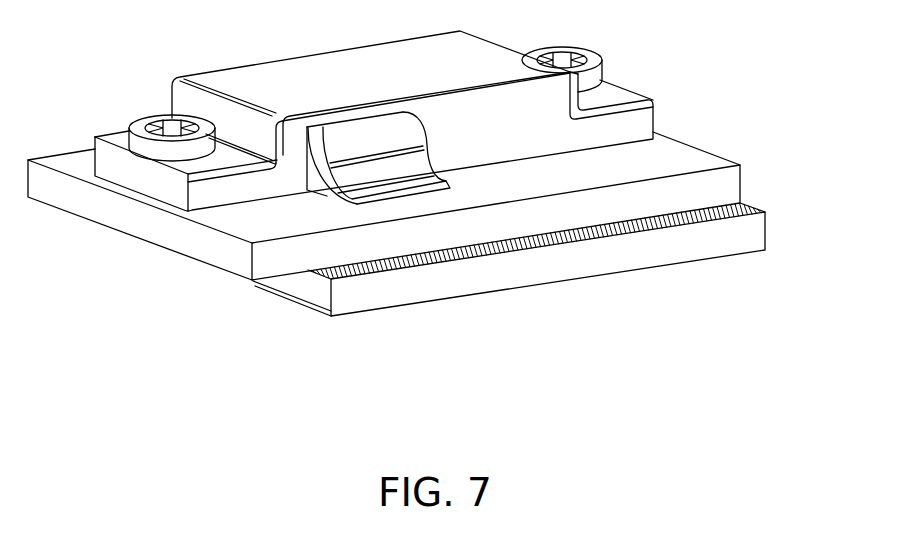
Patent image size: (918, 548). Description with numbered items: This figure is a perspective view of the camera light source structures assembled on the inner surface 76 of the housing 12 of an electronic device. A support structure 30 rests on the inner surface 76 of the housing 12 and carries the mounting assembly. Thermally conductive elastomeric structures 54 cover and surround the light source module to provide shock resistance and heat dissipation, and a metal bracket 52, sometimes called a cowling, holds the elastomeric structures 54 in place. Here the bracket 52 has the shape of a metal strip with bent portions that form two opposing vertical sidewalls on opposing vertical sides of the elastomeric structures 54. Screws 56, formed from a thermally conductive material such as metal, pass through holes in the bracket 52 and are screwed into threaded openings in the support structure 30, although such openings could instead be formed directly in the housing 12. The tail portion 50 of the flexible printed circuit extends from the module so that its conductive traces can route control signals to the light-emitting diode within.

The housing 12 is at (693, 248).
The support structure 30 is at (717, 158).
The tail portion 50 is at (366, 178).
The bracket 52 is at (633, 88).
The thermally conductive elastomeric structures 54 is at (657, 120).
The screws 56 is at (139, 120).
The inner surface 76 is at (747, 206).